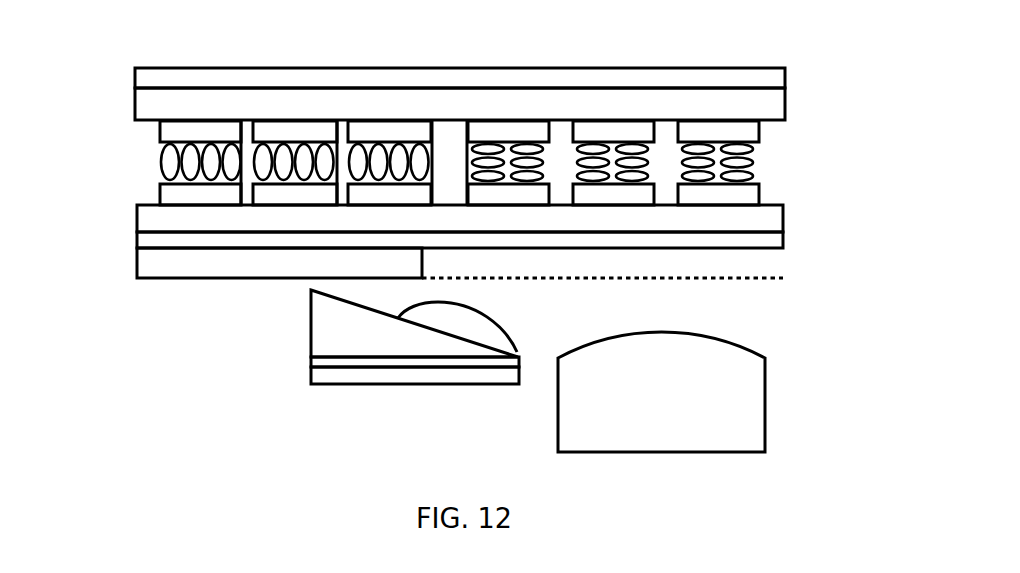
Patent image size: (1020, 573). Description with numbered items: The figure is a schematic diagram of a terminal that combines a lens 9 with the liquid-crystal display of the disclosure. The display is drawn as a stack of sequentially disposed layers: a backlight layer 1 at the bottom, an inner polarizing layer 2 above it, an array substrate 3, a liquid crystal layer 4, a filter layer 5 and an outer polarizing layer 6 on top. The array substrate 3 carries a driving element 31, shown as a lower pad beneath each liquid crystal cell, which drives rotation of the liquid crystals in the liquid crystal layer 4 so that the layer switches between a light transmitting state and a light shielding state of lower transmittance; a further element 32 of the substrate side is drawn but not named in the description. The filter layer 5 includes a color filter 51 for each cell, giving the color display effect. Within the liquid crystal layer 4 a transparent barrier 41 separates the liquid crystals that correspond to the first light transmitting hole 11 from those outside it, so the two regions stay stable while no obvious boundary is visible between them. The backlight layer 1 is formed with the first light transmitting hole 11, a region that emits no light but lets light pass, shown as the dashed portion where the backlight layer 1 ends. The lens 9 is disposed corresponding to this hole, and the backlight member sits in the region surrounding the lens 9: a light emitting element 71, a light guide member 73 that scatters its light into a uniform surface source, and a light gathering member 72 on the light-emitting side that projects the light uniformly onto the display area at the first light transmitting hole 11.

The backlight layer 1 is at (240, 288).
The inner polarizing layer 2 is at (418, 231).
The array substrate 3 is at (509, 214).
The driving element 31 is at (678, 182).
The lower pad 32 is at (234, 176).
The liquid crystal layer 4 is at (677, 141).
The transparent barrier 41 is at (392, 110).
The filter layer 5 is at (508, 85).
The color filter 51 is at (402, 78).
The outer polarizing layer 6 is at (508, 49).
The lens 9 is at (714, 392).
The first light transmitting hole 11 is at (656, 310).
The light emitting element 71 is at (359, 414).
The light gathering member 72 is at (359, 323).
The light guide member 73 is at (359, 347).